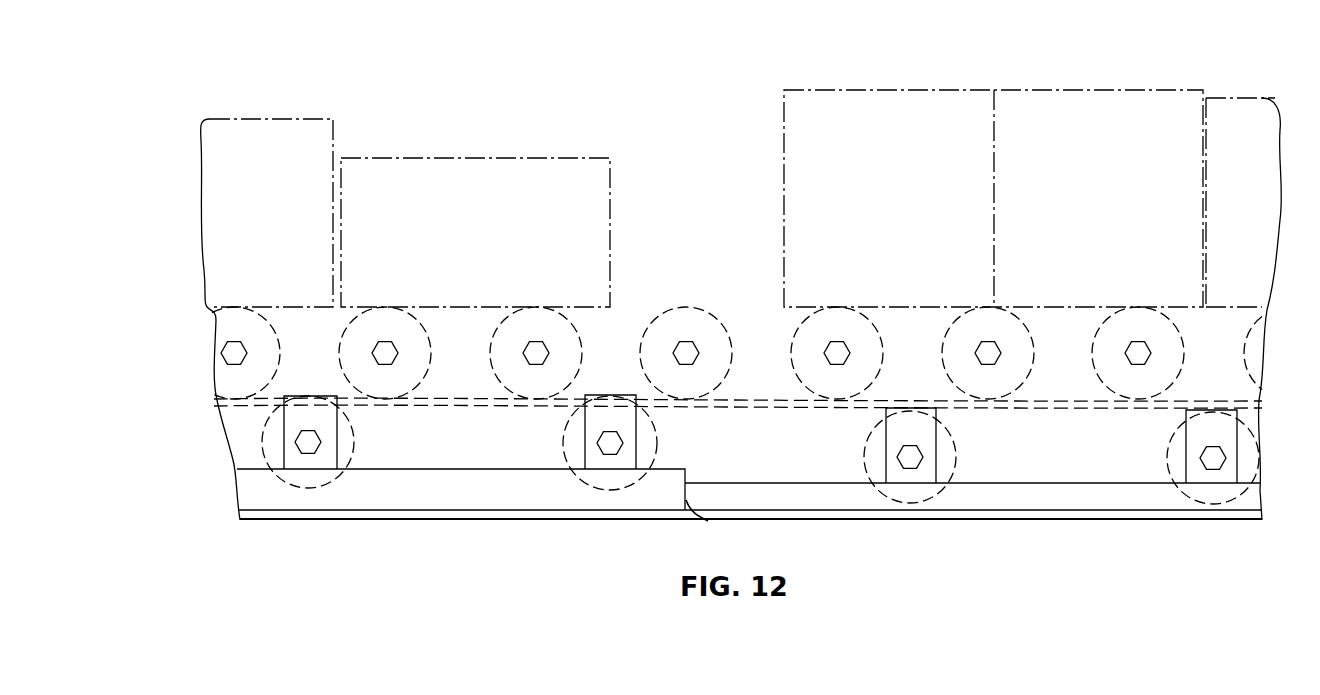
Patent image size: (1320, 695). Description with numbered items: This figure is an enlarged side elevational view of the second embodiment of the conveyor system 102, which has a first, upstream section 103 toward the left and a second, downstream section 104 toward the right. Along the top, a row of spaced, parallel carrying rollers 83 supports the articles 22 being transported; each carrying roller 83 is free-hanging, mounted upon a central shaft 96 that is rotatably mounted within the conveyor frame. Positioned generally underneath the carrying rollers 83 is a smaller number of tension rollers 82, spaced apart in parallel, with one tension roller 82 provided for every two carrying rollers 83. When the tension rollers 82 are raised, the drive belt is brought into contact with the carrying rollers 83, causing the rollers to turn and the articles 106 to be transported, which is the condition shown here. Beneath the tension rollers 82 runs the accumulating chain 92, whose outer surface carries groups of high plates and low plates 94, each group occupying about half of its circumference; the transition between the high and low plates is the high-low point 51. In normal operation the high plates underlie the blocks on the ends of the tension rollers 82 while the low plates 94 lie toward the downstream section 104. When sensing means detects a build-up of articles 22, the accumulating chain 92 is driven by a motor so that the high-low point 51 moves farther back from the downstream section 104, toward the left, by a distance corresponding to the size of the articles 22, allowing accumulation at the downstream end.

The articles 22 is at (500, 182).
The articles 106 is at (272, 142).
The conveyor system 102 is at (658, 97).
The carrying rollers 83 is at (696, 322).
The central shaft 96 is at (381, 353).
The tension rollers 82 is at (598, 415).
The upstream section 103 is at (330, 530).
The high-low point 51 is at (704, 523).
The low plates 94 is at (975, 495).
The accumulating chain 92 is at (1055, 495).
The downstream section 104 is at (1257, 533).